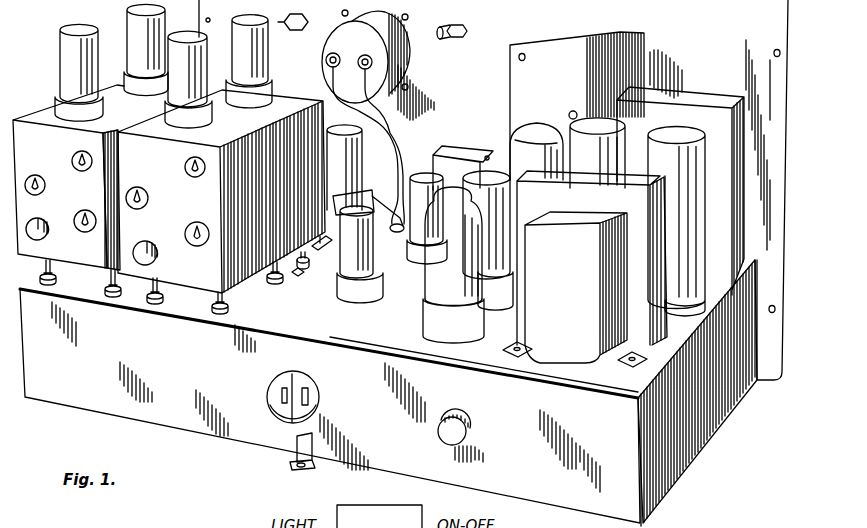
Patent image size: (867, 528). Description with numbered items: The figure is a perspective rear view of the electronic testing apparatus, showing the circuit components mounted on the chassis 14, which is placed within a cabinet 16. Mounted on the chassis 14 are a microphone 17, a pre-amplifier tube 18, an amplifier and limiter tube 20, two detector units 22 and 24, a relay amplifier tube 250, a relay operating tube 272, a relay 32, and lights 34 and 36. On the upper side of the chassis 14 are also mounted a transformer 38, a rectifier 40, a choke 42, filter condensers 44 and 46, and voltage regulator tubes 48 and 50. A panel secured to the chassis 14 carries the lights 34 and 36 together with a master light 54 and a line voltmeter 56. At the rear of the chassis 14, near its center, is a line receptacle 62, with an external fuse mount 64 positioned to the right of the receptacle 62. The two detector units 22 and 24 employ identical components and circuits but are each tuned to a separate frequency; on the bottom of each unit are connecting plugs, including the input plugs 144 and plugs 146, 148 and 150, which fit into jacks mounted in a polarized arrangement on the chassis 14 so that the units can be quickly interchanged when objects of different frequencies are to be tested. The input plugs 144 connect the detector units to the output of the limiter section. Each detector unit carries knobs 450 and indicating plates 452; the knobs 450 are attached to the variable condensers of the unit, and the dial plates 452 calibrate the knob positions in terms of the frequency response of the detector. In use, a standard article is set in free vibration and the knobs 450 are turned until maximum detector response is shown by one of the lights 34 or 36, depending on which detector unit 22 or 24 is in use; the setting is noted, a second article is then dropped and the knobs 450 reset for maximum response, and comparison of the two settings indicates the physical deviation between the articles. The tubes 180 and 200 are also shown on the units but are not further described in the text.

The chassis 14 is at (388, 393).
The cabinet 16 is at (753, 375).
The microphone 17 is at (469, 150).
The pre-amplifier tube 18 is at (413, 175).
The amplifier and limiter tube 20 is at (353, 268).
The detector unit 22 is at (68, 177).
The detector unit 24 is at (221, 191).
The relay 32 is at (338, 205).
The light 34 is at (302, 15).
The light 36 is at (466, 28).
The transformer 38 is at (585, 269).
The rectifier 40 is at (537, 124).
The choke 42 is at (722, 100).
The filter condenser 44 is at (597, 149).
The filter condenser 46 is at (676, 222).
The voltage regulator tube 48 is at (497, 213).
The voltage regulator tube 50 is at (438, 284).
The master light 54 is at (585, 38).
The line voltmeter 56 is at (366, 121).
The line receptacle 62 is at (297, 384).
The external fuse mount 64 is at (470, 424).
The input plug 144 is at (57, 279).
The connecting plug 146 is at (113, 299).
The connecting plug 148 is at (299, 276).
The connecting plug 150 is at (310, 260).
The vacuum tube 180 is at (74, 31).
The vacuum tube 200 is at (268, 59).
The relay amplifier tube 250 is at (322, 244).
The relay operating tube 272 is at (352, 124).
The knob 450 is at (40, 174).
The indicating plate 452 is at (71, 162).